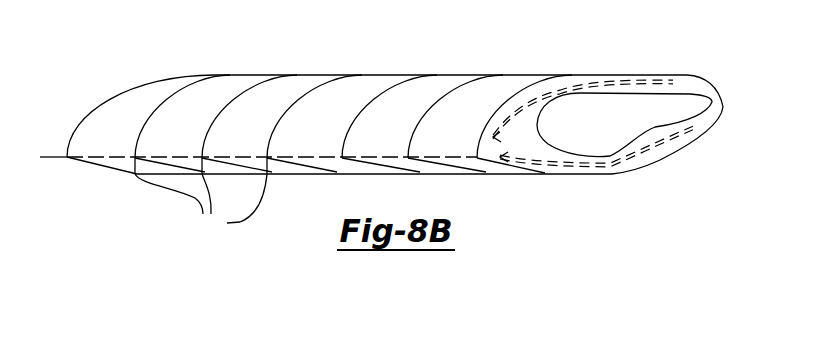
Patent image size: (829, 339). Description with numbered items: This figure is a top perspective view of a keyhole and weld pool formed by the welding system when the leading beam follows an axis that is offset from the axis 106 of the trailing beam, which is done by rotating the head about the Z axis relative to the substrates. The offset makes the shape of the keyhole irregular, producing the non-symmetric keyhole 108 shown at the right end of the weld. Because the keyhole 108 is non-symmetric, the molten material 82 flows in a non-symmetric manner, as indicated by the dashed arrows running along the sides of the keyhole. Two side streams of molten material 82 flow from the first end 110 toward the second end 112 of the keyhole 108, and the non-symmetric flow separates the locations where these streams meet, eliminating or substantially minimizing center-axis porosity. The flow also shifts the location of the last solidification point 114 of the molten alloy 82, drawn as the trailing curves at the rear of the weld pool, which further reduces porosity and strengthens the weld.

The axis 106 is at (56, 157).
The non-symmetric keyhole 108 is at (617, 120).
The first end 110 is at (709, 100).
The second end 112 is at (532, 130).
The last solidification point 114 is at (201, 207).
The molten material 82 is at (700, 127).